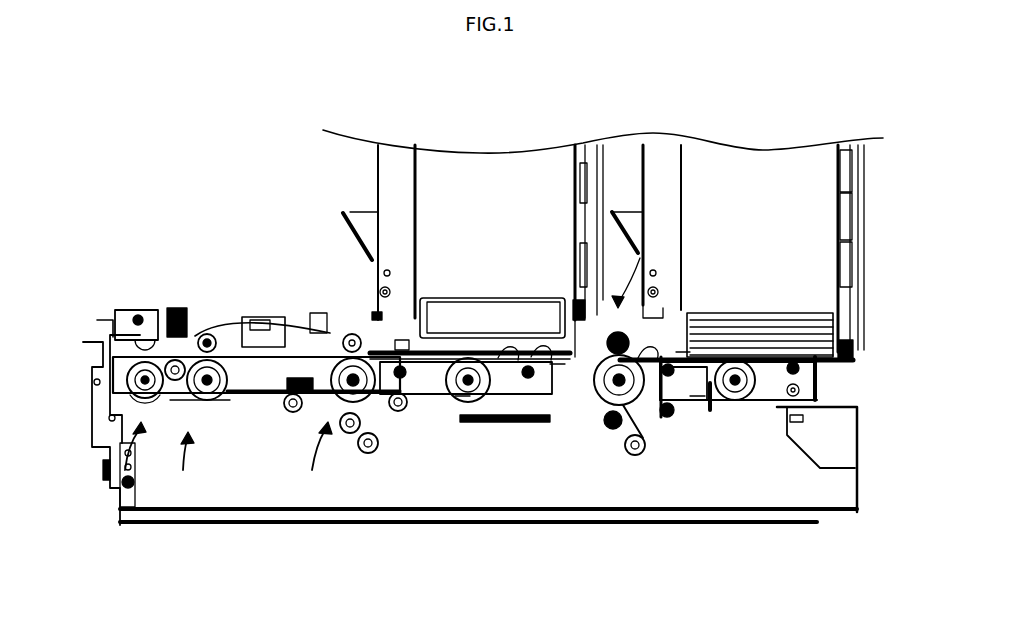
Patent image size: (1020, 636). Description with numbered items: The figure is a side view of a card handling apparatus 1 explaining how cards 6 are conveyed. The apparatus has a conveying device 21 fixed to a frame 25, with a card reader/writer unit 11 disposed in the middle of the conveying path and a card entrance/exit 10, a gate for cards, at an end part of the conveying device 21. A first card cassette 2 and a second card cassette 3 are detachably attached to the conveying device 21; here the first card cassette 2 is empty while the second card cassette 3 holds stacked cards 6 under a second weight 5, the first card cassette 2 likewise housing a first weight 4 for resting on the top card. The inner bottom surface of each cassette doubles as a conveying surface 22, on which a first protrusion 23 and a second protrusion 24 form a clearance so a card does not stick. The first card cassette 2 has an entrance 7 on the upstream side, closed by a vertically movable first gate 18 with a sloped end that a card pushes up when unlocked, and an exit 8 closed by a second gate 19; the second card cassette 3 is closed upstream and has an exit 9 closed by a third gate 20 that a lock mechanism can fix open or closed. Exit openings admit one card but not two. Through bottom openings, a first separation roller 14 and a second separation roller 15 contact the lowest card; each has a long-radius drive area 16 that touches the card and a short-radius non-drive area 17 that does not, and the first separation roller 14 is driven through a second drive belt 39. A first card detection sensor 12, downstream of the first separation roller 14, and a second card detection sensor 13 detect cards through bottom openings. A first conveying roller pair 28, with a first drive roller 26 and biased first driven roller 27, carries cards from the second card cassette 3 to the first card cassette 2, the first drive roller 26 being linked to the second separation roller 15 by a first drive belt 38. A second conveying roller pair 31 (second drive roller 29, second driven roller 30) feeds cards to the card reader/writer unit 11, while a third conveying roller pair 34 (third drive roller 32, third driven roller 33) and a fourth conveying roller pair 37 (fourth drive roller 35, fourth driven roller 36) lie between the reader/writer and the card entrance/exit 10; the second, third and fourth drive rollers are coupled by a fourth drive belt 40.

The card handling apparatus 1 is at (205, 179).
The first card cassette 2 is at (427, 175).
The second card cassette 3 is at (802, 170).
The first weight 4 is at (472, 302).
The second weight 5 is at (778, 317).
The card 6 is at (435, 357).
The entrance of the first card cassette 7 is at (580, 357).
The exit of the first card cassette 8 is at (400, 350).
The exit of the second card cassette 9 is at (683, 352).
The card entrance/exit 10 is at (83, 350).
The card reader/writer unit 11 is at (268, 335).
The first card detection sensor 12 is at (457, 360).
The second card detection sensor 13 is at (758, 367).
The first separation roller 14 is at (460, 395).
The second separation roller 15 is at (735, 386).
The drive area 16 is at (487, 392).
The non-drive area 17 is at (450, 385).
The first gate 18 is at (556, 365).
The second gate 19 is at (400, 345).
The third gate 20 is at (665, 362).
The conveying device 21 is at (776, 400).
The conveying surface 22 is at (505, 359).
The first protrusion 23 is at (538, 357).
The second protrusion 24 is at (807, 350).
The frame 25 is at (858, 498).
The first drive roller 26 is at (617, 352).
The first driven roller 27 is at (619, 386).
The first conveying roller pair 28 is at (632, 272).
The second drive roller 29 is at (345, 433).
The second driven roller 30 is at (350, 342).
The second conveying roller pair 31 is at (327, 437).
The third drive roller 32 is at (205, 402).
The third driven roller 33 is at (207, 345).
The third conveying roller pair 34 is at (186, 450).
The fourth drive roller 35 is at (142, 400).
The fourth driven roller 36 is at (138, 343).
The fourth conveying roller pair 37 is at (139, 402).
The first drive belt 38 is at (697, 394).
The second drive belt 39 is at (372, 453).
The fourth drive belt 40 is at (245, 392).